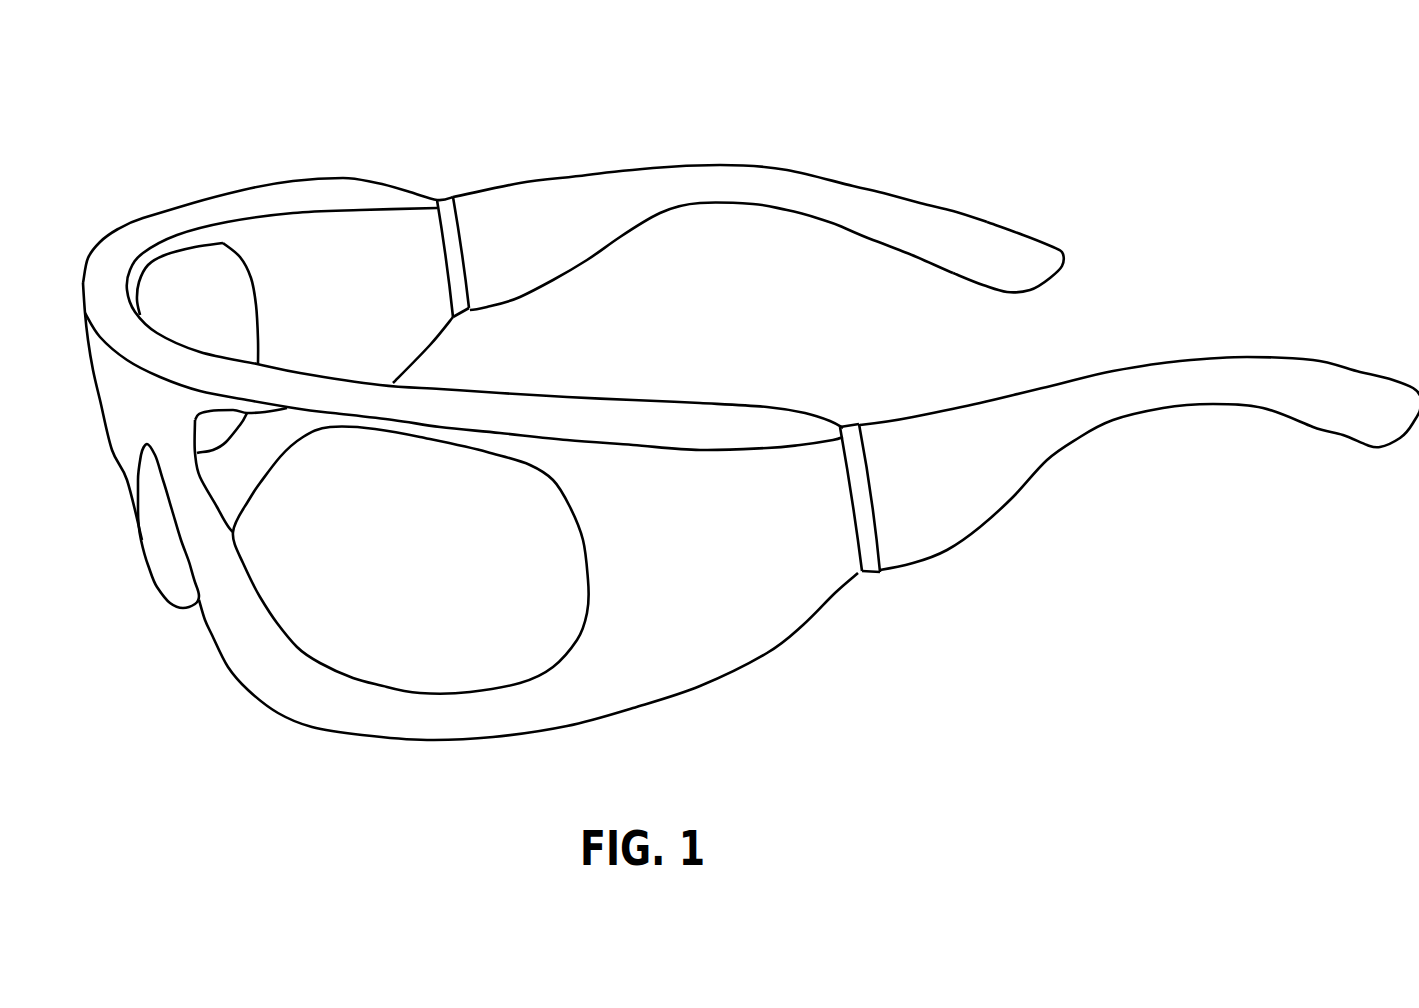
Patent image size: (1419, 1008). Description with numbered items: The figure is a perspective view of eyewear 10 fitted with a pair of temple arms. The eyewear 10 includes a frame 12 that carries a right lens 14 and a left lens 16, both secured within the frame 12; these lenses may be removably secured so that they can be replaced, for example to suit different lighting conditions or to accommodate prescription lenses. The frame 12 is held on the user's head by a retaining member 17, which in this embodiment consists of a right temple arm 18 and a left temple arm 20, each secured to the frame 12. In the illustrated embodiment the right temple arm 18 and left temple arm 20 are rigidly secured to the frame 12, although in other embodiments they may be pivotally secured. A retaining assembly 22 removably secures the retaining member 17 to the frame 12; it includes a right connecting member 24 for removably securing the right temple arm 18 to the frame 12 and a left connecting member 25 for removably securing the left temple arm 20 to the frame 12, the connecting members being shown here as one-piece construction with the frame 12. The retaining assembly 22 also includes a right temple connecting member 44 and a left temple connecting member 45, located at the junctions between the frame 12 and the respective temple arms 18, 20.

The eyewear 10 is at (945, 118).
The frame 12 is at (740, 545).
The right lens 14 is at (237, 307).
The left lens 16 is at (419, 560).
The retaining member 17 is at (1082, 252).
The right temple arm 18 is at (747, 195).
The left temple arm 20 is at (1073, 435).
The retaining assembly 22 is at (685, 369).
The right connecting member 24 is at (465, 311).
The left connecting member 25 is at (869, 562).
The right temple connecting member 44 is at (457, 226).
The left temple connecting member 45 is at (867, 472).